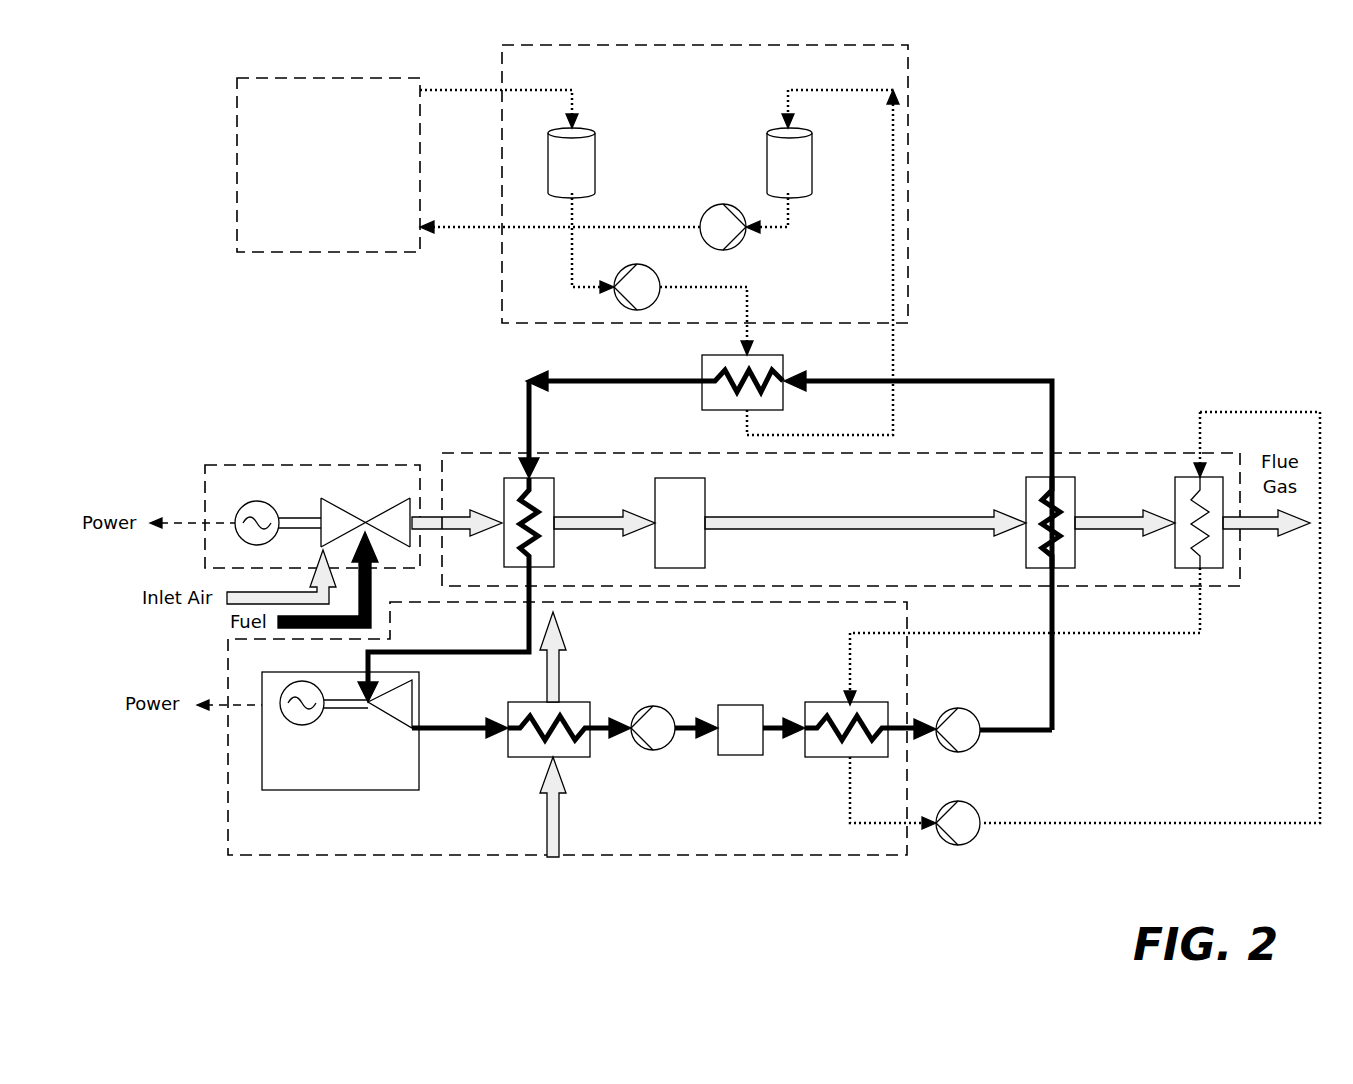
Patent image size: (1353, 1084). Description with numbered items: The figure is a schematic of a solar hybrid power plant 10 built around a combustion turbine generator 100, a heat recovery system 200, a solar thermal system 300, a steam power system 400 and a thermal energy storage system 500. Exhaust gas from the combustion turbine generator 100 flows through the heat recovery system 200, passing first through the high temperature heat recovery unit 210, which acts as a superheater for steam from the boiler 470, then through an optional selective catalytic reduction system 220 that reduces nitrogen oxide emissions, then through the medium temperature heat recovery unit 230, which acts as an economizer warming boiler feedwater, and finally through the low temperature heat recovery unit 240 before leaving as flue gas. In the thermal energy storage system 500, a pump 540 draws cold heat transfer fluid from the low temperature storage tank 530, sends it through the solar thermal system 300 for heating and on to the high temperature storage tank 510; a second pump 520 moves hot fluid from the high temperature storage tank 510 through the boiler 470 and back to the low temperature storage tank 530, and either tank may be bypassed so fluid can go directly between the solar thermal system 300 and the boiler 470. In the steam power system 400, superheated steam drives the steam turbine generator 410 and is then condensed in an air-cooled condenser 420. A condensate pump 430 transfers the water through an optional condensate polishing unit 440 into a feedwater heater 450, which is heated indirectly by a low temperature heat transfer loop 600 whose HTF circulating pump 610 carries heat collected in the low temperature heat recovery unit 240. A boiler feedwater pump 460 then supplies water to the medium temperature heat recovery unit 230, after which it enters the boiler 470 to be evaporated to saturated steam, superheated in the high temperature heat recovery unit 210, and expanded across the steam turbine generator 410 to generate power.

The solar hybrid power plant 10 is at (1248, 124).
The combustion turbine generator 100 is at (330, 465).
The heat recovery system 200 is at (942, 453).
The high temperature heat recovery unit 210 is at (556, 500).
The selective catalytic reduction system 220 is at (707, 500).
The medium temperature heat recovery unit 230 is at (1077, 500).
The low temperature heat recovery unit 240 is at (1173, 545).
The solar thermal system 300 is at (372, 78).
The steam power system 400 is at (296, 856).
The steam turbine generator 410 is at (421, 700).
The air-cooled condenser 420 is at (575, 758).
The condensate pump 430 is at (660, 708).
The condensate polishing unit 440 is at (748, 705).
The feedwater heater 450 is at (830, 757).
The boiler feedwater pump 460 is at (972, 714).
The boiler 470 is at (770, 356).
The thermal energy storage system 500 is at (912, 95).
The high temperature storage tank 510 is at (597, 155).
The pump 520 is at (648, 268).
The low temperature storage tank 530 is at (814, 155).
The pump 540 is at (705, 208).
The low temperature heat transfer loop 600 is at (1237, 826).
The HTF circulating pump 610 is at (972, 808).